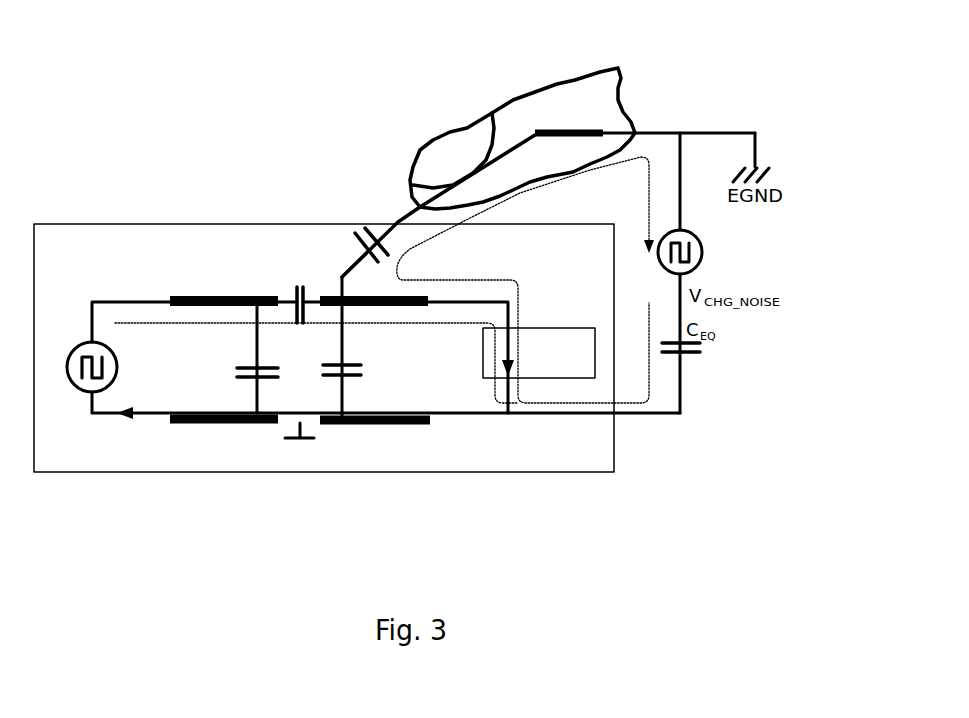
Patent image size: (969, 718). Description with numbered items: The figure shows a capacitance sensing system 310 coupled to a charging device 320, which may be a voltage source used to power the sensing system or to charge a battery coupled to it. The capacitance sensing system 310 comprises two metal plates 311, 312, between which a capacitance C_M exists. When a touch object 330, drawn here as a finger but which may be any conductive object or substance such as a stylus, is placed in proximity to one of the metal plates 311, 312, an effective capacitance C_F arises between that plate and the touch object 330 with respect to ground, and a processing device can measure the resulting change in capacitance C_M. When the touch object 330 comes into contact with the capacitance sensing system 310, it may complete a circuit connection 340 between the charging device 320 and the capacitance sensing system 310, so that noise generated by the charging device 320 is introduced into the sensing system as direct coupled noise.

The capacitance sensing system 310 is at (357, 330).
The metal plate 311 is at (197, 316).
The metal plate 312 is at (391, 318).
The charging device 320 is at (703, 251).
The touch object 330 is at (512, 100).
The circuit connection 340 is at (601, 204).